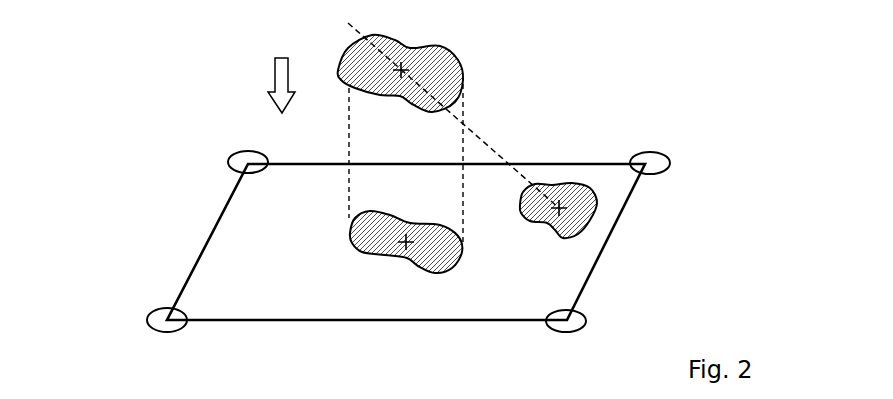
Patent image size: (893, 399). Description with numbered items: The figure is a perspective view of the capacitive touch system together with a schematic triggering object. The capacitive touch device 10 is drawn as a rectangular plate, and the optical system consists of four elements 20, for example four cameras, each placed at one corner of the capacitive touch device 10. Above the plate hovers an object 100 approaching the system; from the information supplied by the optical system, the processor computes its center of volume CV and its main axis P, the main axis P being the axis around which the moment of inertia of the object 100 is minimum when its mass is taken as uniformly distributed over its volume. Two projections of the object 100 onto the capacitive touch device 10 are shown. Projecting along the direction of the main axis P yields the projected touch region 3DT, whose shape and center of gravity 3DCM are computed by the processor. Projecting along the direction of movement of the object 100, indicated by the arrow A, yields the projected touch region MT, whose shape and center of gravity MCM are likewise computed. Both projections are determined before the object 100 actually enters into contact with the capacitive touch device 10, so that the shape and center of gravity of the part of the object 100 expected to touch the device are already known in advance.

The capacitive touch device 10 is at (239, 301).
The elements of the optical system 20 is at (258, 157).
The arrow indicating direction of movement A is at (271, 85).
The object 100 is at (437, 49).
The main axis P is at (407, 74).
The center of volume CV is at (396, 69).
The projected touch region MT is at (356, 251).
The center of gravity of the projected touch region MT MCM is at (412, 251).
The projected touch region 3DT is at (598, 207).
The center of gravity of the projected touch region 3DT 3DCM is at (575, 215).